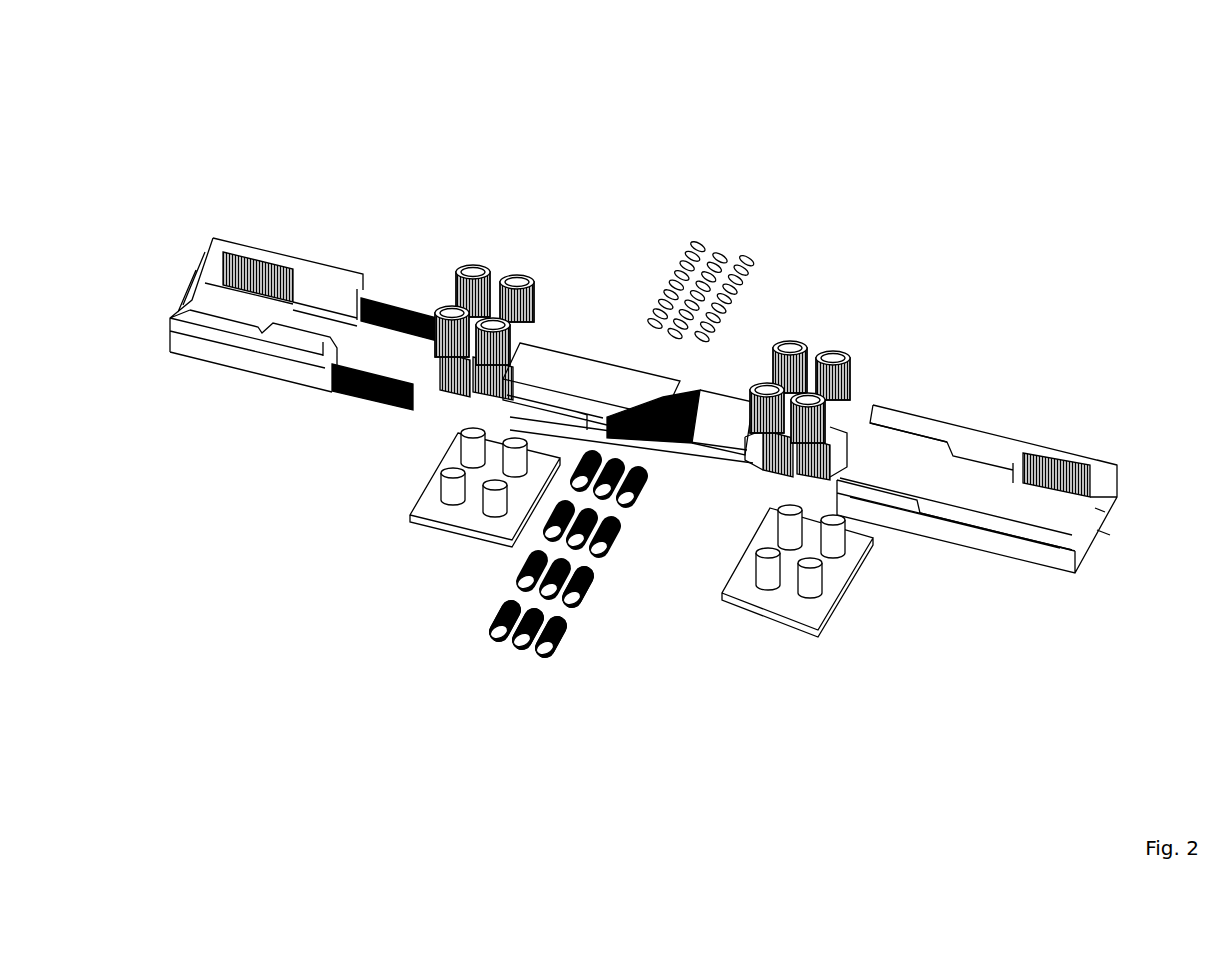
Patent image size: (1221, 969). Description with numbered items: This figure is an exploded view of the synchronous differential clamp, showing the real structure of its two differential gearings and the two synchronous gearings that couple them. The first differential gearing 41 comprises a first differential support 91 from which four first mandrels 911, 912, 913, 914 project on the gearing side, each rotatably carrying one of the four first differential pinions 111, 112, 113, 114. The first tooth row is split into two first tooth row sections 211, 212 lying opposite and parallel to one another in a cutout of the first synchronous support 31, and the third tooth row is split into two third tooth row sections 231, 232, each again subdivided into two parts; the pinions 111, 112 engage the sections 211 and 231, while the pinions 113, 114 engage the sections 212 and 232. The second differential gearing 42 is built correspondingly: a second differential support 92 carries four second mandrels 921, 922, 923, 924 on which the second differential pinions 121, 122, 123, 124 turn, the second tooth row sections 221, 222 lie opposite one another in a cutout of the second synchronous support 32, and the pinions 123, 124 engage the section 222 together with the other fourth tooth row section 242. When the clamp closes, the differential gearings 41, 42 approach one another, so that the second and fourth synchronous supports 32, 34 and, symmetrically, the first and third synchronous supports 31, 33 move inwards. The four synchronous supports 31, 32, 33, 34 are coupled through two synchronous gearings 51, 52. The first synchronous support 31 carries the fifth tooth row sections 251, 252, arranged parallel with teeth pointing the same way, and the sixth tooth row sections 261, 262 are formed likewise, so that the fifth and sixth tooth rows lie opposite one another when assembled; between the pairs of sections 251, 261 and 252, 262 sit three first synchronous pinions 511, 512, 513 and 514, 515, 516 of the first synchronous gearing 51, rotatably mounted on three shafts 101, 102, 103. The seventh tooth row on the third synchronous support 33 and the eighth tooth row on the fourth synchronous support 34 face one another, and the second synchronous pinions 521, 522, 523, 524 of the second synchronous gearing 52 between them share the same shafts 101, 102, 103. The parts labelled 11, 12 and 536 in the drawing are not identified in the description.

The first connector assembly 11 is at (880, 668).
The second connector assembly 12 is at (323, 608).
The first synchronous support 31 is at (992, 438).
The second synchronous support 32 is at (310, 258).
The third synchronous support 33 is at (708, 408).
The fourth synchronous support 34 is at (640, 372).
The first differential gearing 41 is at (938, 262).
The second differential gearing 42 is at (404, 148).
The first synchronous gearing 51 is at (458, 687).
The second synchronous gearing 52 is at (537, 687).
The first differential support 91 is at (818, 607).
The second differential support 92 is at (455, 453).
The shaft 101 is at (695, 248).
The shaft 102 is at (723, 252).
The shaft 103 is at (750, 262).
The first differential pinion 111 is at (782, 338).
The first differential pinion 112 is at (823, 348).
The first differential pinion 113 is at (745, 437).
The first differential pinion 114 is at (852, 382).
The second differential pinion 121 is at (478, 265).
The second differential pinion 122 is at (522, 280).
The second differential pinion 123 is at (446, 305).
The second differential pinion 124 is at (508, 270).
The first tooth row section 211 is at (1070, 455).
The first tooth row section 212 is at (1012, 530).
The second tooth row section 221 is at (230, 258).
The second tooth row section 222 is at (222, 315).
The third tooth row section 231 is at (838, 418).
The third tooth row section 232 is at (762, 455).
The fourth tooth row section 242 is at (418, 395).
The fifth tooth row section 251 is at (917, 404).
The fifth tooth row section 252 is at (880, 505).
The sixth tooth row section 261 is at (372, 296).
The sixth tooth row section 262 is at (340, 387).
The first synchronous pinion 511 is at (477, 710).
The first synchronous pinion 512 is at (477, 710).
The first synchronous pinion 513 is at (512, 642).
The first synchronous pinion 514 is at (467, 663).
The first synchronous pinion 515 is at (467, 663).
The first synchronous pinion 516 is at (490, 640).
The second synchronous pinion 521 is at (539, 716).
The second synchronous pinion 522 is at (539, 716).
The second synchronous pinion 523 is at (540, 652).
The second synchronous pinion 524 is at (553, 745).
The contact cylinder 536 is at (571, 605).
The first mandrel 911 is at (782, 528).
The first mandrel 912 is at (830, 547).
The first mandrel 913 is at (762, 577).
The first mandrel 914 is at (803, 593).
The second mandrel 921 is at (470, 445).
The second mandrel 922 is at (516, 455).
The second mandrel 923 is at (450, 493).
The second mandrel 924 is at (492, 503).